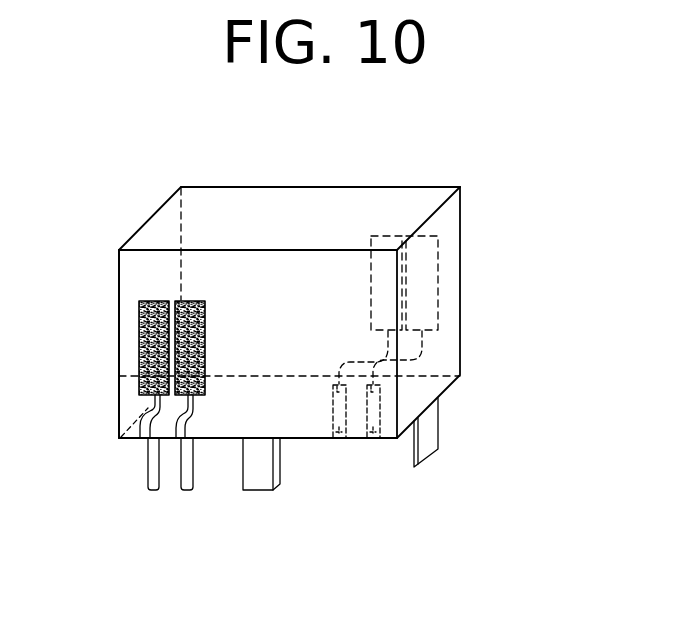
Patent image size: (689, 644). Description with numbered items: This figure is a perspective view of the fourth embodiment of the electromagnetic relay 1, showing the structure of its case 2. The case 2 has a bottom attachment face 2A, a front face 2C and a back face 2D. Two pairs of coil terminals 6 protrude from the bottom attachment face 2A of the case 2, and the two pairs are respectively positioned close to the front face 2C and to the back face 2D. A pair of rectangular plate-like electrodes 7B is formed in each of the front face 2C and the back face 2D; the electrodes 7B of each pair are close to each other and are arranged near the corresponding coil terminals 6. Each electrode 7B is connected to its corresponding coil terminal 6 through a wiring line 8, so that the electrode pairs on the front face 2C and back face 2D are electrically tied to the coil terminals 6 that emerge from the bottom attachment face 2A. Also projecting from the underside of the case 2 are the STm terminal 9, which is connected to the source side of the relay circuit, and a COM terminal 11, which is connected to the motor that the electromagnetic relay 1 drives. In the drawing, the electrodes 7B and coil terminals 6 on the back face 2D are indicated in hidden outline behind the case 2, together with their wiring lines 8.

The electromagnetic relay 1 is at (233, 228).
The case 2 is at (143, 288).
The bottom attachment face 2A is at (298, 422).
The front face 2C is at (155, 267).
The back face 2D is at (328, 198).
The coil terminals 6 is at (150, 490).
The electrodes 7B is at (140, 338).
The wiring line 8 is at (135, 437).
The STm terminal 9 is at (265, 482).
The COM terminal 11 is at (425, 437).